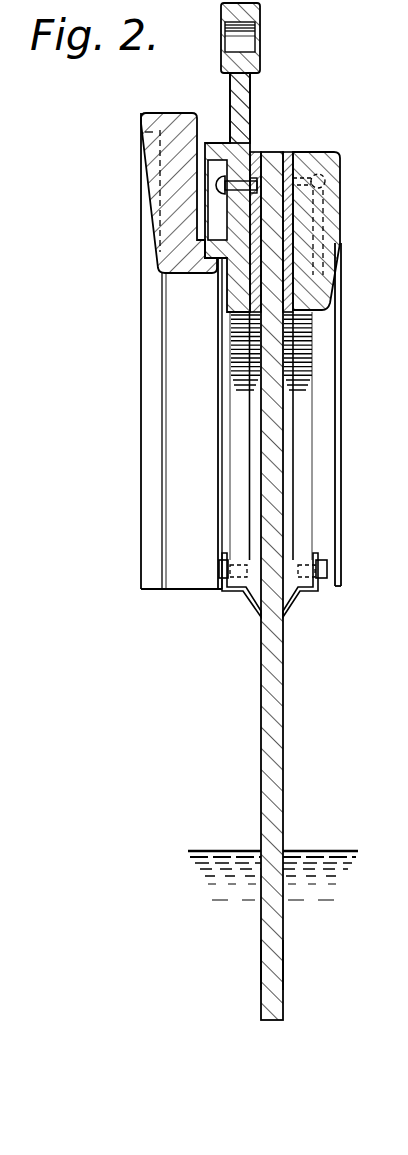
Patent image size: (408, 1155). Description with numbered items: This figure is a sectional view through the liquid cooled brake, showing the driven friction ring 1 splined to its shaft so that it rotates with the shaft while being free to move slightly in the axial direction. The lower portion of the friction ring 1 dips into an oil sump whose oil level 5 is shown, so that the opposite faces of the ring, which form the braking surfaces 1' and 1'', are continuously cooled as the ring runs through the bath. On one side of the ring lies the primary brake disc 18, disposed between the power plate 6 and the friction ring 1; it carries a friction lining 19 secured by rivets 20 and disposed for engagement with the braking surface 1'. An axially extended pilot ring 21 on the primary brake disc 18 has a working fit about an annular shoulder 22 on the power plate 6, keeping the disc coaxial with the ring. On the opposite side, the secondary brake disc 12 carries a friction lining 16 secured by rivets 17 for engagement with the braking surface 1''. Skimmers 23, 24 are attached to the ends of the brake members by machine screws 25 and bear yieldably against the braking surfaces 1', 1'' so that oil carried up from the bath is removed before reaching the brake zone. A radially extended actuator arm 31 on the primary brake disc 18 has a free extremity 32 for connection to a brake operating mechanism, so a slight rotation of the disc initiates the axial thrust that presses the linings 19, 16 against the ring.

The driven friction ring 1 is at (287, 586).
The braking surface 1' is at (242, 965).
The braking surface 1'' is at (300, 965).
The oil level 5 is at (331, 850).
The power plate 6 is at (167, 217).
The secondary brake disc 12 is at (311, 217).
The friction lining 16 is at (293, 292).
The rivets 17 is at (311, 166).
The primary brake disc 18 is at (172, 209).
The friction lining 19 is at (256, 233).
The rivets 20 is at (239, 176).
The pilot ring 21 is at (204, 243).
The annular shoulder 22 is at (217, 273).
The skimmer 23 is at (243, 603).
The skimmer 24 is at (295, 606).
The machine screws 25 is at (226, 594).
The actuator arm 31 is at (241, 90).
The free extremity 32 is at (244, 38).